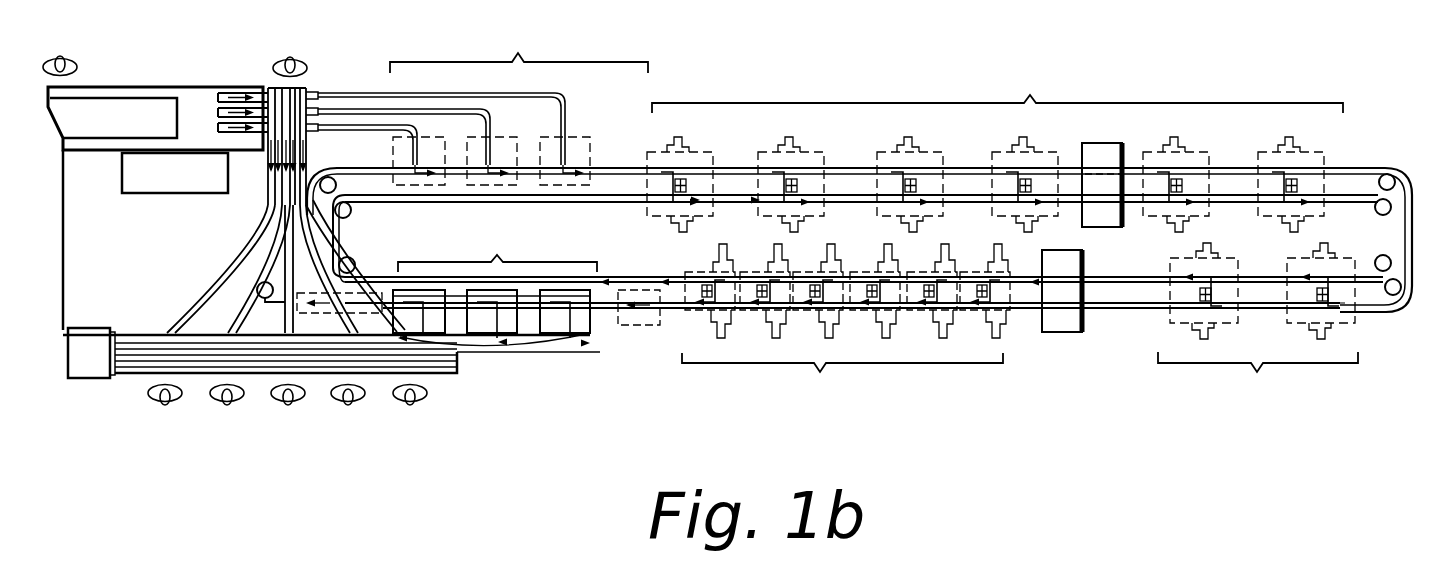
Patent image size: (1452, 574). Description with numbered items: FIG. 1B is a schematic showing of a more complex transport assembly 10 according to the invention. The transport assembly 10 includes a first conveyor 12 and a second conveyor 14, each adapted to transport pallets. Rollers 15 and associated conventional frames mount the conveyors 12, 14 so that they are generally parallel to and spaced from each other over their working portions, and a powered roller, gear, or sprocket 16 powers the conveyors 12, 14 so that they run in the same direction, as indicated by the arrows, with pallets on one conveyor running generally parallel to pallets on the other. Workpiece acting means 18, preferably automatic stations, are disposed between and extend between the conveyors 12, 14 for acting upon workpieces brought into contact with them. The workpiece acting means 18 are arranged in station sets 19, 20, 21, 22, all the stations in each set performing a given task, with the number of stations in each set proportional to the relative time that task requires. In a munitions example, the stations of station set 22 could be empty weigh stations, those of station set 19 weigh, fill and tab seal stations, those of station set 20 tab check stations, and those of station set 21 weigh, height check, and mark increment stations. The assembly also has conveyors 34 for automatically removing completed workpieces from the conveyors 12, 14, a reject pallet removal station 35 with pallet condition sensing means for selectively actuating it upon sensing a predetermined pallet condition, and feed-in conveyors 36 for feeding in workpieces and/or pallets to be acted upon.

The transport assembly 10 is at (1188, 56).
The first conveyor 12 is at (730, 166).
The second conveyor 14 is at (733, 270).
The rollers 15 is at (1388, 176).
The powered roller 16 is at (1380, 257).
The workpiece acting means 18 is at (497, 137).
The station set 19 is at (1005, 238).
The station set 20 is at (842, 378).
The station set 21 is at (497, 251).
The station set 22 is at (519, 46).
The conveyors 34 is at (152, 374).
The reject pallet removal station 35 is at (653, 323).
The feed-in conveyors 36 is at (370, 112).